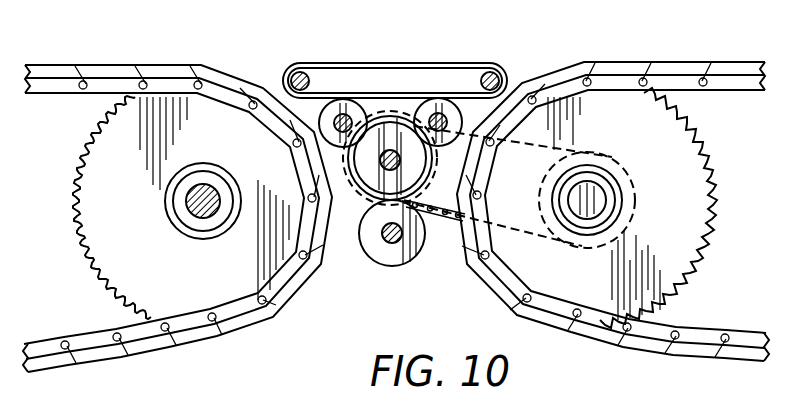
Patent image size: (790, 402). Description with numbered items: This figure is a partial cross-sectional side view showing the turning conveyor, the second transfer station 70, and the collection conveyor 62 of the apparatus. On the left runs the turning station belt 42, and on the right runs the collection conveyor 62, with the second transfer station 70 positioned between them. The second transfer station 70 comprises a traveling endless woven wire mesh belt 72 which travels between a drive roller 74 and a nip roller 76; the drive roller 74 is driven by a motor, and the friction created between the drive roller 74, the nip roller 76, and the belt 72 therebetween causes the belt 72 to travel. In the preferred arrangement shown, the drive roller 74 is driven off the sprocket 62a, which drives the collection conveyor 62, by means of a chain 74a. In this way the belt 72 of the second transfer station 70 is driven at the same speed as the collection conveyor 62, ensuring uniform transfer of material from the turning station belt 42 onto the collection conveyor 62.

The turning station belt 42 is at (114, 70).
The collection conveyor 62 is at (608, 64).
The sprocket 62a is at (653, 246).
The second transfer station 70 is at (392, 56).
The woven wire mesh belt 72 is at (365, 68).
The drive roller 74 is at (391, 148).
The chain 74a is at (441, 216).
The nip roller 76 is at (382, 254).